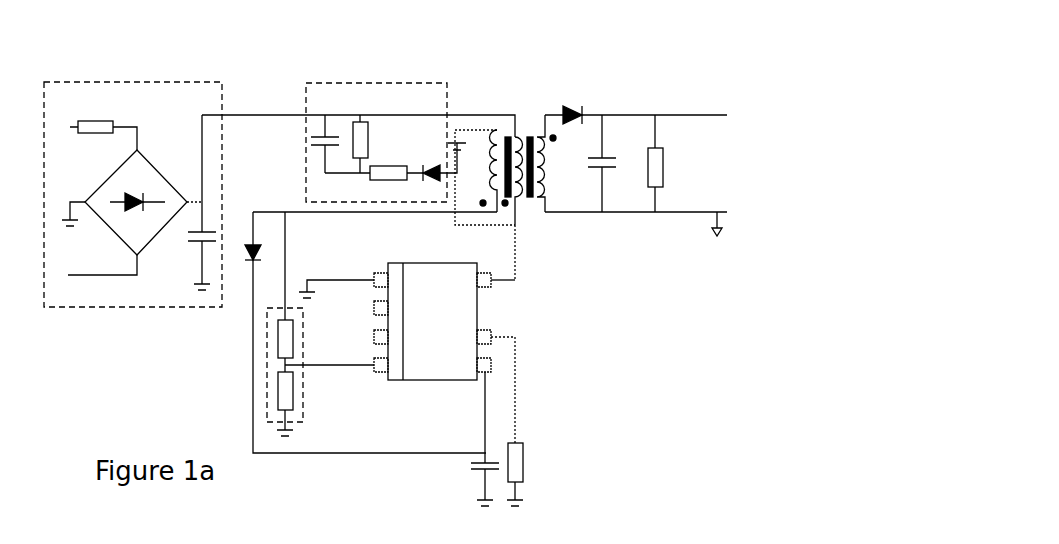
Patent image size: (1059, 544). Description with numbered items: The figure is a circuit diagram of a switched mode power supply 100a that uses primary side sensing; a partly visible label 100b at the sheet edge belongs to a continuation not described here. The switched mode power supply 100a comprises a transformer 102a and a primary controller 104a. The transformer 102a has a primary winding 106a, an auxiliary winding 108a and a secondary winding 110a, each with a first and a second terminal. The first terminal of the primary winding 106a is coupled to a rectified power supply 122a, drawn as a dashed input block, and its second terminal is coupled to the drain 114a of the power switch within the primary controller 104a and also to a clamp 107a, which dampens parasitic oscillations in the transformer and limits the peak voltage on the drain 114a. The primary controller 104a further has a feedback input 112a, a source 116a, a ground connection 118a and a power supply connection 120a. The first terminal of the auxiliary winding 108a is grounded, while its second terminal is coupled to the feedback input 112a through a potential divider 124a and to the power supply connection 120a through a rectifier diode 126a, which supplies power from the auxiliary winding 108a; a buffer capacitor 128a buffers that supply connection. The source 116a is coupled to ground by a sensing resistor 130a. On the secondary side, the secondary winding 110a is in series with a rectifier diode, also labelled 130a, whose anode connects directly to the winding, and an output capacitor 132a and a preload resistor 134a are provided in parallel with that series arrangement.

The switched mode power supply 100a is at (477, 78).
The power converter (continued figure) 100b is at (375, 539).
The transformer 102a is at (525, 120).
The primary controller 104a is at (476, 342).
The primary winding 106a is at (515, 198).
The clamp 107a is at (340, 83).
The auxiliary winding 108a is at (503, 205).
The secondary winding 110a is at (540, 197).
The feedback input 112a is at (385, 380).
The drain 114a is at (492, 282).
The source 116a is at (492, 338).
The ground connection 118a is at (373, 278).
The power supply connection 120a is at (492, 366).
The rectified power supply 122a is at (130, 82).
The potential divider 124a is at (268, 420).
The rectifier diode 126a is at (250, 268).
The buffer capacitor 128a is at (470, 462).
The sensing resistor / diode 130a is at (584, 112).
The output capacitor 132a is at (607, 133).
The preload resistor 134a is at (660, 188).